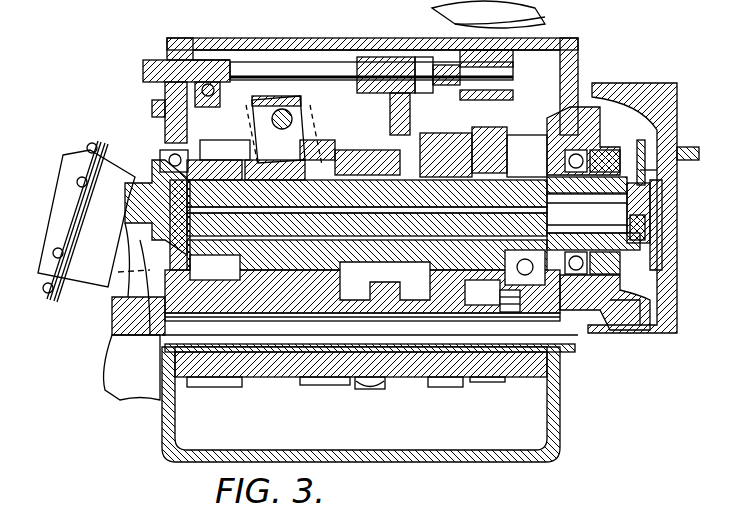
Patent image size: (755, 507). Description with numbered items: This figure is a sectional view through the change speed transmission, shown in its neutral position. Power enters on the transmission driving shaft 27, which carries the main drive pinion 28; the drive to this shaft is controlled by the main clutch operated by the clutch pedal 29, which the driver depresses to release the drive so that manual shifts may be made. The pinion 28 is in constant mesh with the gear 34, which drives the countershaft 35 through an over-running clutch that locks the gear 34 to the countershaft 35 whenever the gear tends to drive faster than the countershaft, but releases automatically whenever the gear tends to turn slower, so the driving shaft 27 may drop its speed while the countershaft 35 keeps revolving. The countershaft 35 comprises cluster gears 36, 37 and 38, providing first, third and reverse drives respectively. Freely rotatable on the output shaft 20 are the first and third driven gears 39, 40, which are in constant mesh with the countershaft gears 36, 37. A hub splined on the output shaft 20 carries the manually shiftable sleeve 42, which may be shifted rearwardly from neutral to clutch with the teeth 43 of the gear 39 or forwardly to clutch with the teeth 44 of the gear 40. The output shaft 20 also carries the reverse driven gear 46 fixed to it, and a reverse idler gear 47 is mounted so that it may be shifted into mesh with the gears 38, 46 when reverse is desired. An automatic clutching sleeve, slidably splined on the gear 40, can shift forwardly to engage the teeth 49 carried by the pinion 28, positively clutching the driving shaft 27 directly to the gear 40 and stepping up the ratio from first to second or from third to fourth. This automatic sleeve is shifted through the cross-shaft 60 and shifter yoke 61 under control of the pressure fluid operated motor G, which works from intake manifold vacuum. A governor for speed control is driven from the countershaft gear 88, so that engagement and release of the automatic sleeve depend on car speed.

The output shaft 20 is at (598, 213).
The transmission driving shaft 27 is at (145, 175).
The main drive pinion 28 is at (230, 172).
The clutch pedal 29 is at (336, 215).
The gear 34 is at (210, 388).
The countershaft 35 is at (410, 390).
The cluster gear 36 is at (445, 387).
The cluster gear 37 is at (320, 386).
The cluster gear 38 is at (492, 383).
The first driven gear 39 is at (478, 148).
The third driven gear 40 is at (322, 142).
The manually shiftable sleeve 42 is at (425, 135).
The teeth 43 is at (358, 70).
The teeth 44 is at (360, 152).
The reverse driven gear 46 is at (550, 135).
The reverse idler gear 47 is at (505, 312).
The teeth 49 is at (238, 160).
The cross-shaft 60 is at (283, 108).
The shifter yoke 61 is at (262, 100).
The countershaft gear 88 is at (385, 322).
The pressure fluid operated motor G is at (78, 165).